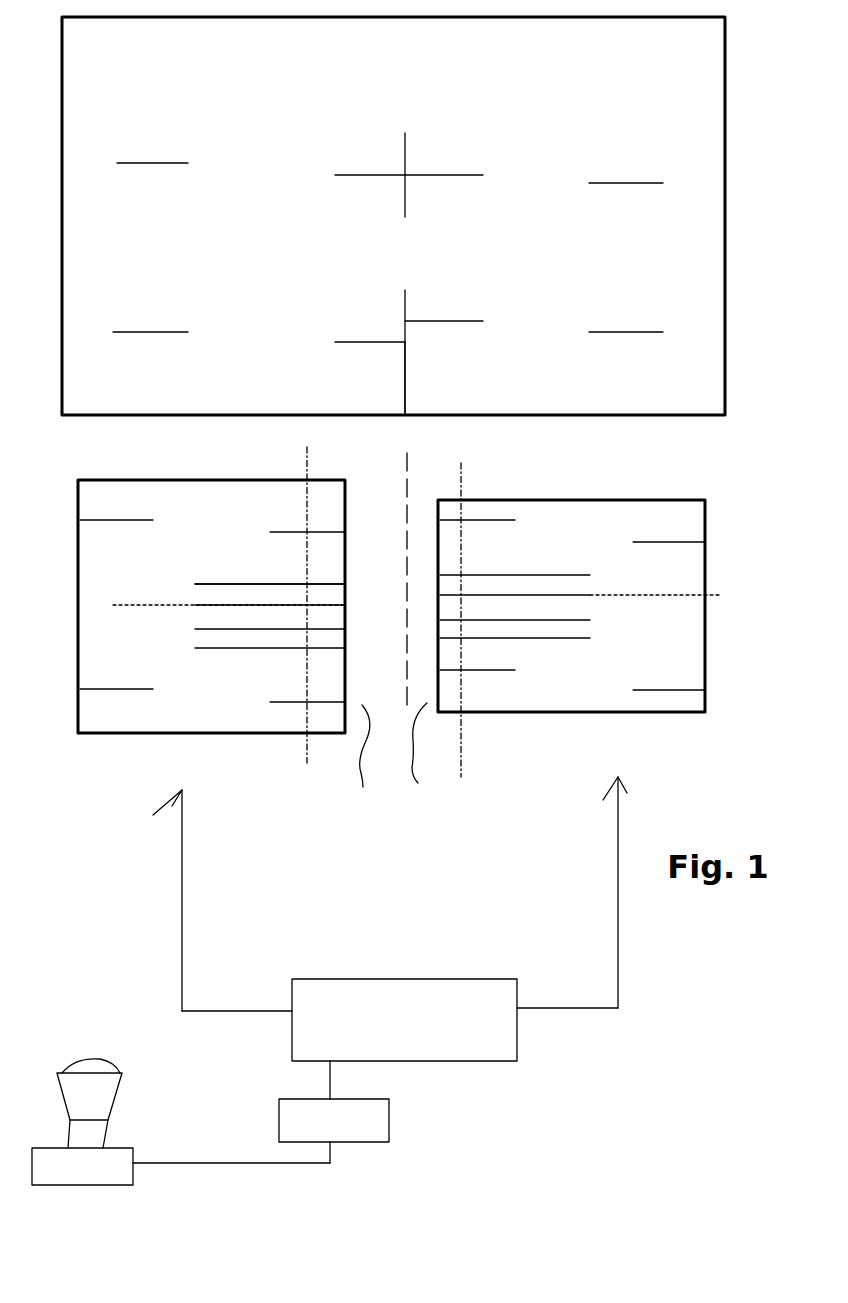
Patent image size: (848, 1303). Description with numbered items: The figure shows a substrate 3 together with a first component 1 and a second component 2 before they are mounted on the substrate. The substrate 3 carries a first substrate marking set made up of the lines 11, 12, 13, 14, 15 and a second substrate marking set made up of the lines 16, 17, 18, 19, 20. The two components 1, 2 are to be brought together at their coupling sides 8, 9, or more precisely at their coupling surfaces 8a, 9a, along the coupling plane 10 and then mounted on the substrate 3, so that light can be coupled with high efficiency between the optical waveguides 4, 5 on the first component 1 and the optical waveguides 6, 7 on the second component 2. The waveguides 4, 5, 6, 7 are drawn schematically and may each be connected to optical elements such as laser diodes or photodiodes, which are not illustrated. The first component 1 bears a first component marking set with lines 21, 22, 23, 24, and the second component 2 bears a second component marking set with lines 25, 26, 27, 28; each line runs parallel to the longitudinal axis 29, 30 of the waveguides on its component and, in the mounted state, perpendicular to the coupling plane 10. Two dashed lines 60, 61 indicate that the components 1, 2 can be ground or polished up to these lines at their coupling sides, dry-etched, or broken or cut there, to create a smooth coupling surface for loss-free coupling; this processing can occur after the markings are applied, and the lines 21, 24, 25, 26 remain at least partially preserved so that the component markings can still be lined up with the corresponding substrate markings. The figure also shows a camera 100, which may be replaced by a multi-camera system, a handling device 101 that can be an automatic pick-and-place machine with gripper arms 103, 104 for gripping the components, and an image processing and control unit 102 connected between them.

The first component 1 is at (155, 735).
The second component 2 is at (548, 714).
The substrate 3 is at (60, 347).
The optical waveguide 4 is at (245, 648).
The optical waveguide 5 is at (276, 630).
The optical waveguide 6 is at (537, 639).
The optical waveguide 7 is at (575, 622).
The coupling side 8 is at (370, 762).
The coupling surface 8a is at (348, 574).
The coupling side 9 is at (418, 636).
The coupling surface 9a is at (438, 571).
The coupling plane 10 is at (408, 397).
The substrate marking 11 is at (343, 344).
The substrate marking 12 is at (160, 333).
The substrate marking 13 is at (140, 165).
The substrate marking 14 is at (345, 177).
The substrate marking 15 is at (402, 153).
The substrate marking 16 is at (450, 319).
The substrate marking 17 is at (456, 174).
The substrate marking 18 is at (628, 181).
The substrate marking 19 is at (633, 331).
The substrate marking 20 is at (410, 352).
The component marking 21 is at (285, 703).
The component marking 22 is at (109, 690).
The component marking 23 is at (98, 521).
The component marking 24 is at (285, 530).
The component marking 25 is at (492, 670).
The component marking 26 is at (497, 516).
The component marking 27 is at (662, 538).
The component marking 28 is at (672, 690).
The longitudinal axis 29 is at (145, 602).
The longitudinal axis 30 is at (690, 585).
The dashed line 60 is at (320, 748).
The dashed line 61 is at (458, 752).
The camera 100 is at (92, 1190).
The handling device 101 is at (525, 1037).
The image processing and control unit 102 is at (395, 1125).
The gripper arm 103 is at (182, 872).
The gripper arm 104 is at (625, 908).